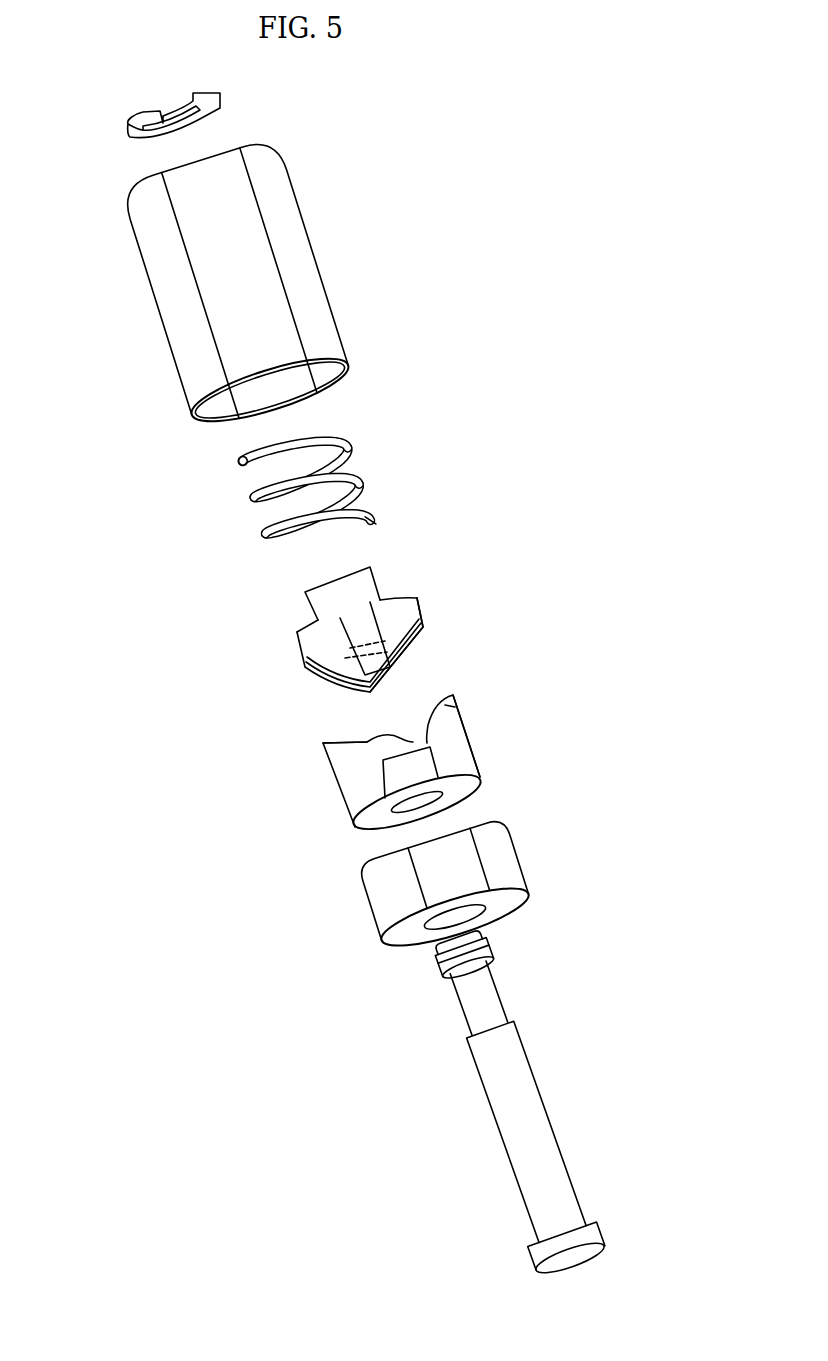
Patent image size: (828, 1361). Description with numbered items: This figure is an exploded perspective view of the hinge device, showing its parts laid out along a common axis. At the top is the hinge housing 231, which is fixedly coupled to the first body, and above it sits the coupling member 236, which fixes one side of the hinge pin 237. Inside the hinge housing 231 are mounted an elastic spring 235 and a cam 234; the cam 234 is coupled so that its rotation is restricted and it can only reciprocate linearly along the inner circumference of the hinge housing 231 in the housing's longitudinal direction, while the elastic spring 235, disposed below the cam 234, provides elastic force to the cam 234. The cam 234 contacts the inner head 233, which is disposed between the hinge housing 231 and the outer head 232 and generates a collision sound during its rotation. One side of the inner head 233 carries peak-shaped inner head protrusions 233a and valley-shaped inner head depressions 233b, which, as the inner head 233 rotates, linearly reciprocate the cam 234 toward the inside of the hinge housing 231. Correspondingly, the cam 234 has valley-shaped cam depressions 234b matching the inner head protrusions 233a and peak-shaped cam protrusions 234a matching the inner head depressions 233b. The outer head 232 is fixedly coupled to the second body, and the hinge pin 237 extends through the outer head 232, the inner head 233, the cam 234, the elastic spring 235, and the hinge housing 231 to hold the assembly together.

The hinge housing 231 is at (177, 281).
The outer head 232 is at (387, 902).
The inner head 233 is at (398, 785).
The inner head protrusions 233a is at (453, 696).
The inner head depressions 233b is at (383, 742).
The cam 234 is at (368, 663).
The cam protrusions 234a is at (378, 683).
The cam depressions 234b is at (423, 628).
The elastic spring 235 is at (268, 503).
The coupling member 236 is at (223, 100).
The hinge pin 237 is at (507, 1100).